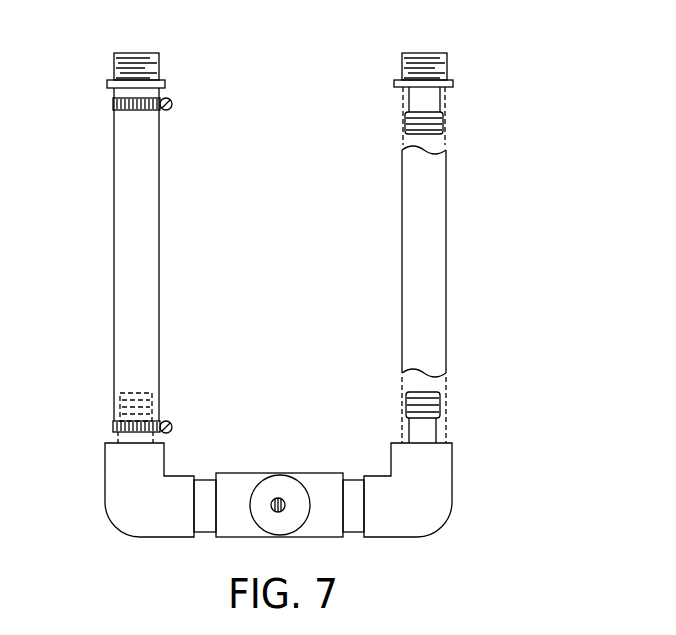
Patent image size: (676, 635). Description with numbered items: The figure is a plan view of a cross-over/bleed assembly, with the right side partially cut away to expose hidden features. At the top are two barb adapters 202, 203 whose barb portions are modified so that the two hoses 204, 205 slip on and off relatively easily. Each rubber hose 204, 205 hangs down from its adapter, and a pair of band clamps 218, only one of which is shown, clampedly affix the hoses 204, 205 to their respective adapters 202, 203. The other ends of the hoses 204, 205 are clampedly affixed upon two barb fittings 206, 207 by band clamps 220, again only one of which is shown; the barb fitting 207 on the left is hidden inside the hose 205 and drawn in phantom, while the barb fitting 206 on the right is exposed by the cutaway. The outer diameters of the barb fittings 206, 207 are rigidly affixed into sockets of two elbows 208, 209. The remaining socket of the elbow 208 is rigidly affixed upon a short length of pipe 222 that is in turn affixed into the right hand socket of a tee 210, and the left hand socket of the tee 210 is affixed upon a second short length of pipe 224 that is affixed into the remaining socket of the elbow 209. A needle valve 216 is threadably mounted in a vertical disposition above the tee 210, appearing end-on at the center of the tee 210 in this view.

The barb adapter 202 is at (420, 52).
The barb adapter 203 is at (131, 52).
The hose 204 is at (447, 257).
The hose 205 is at (238, 258).
The barb fitting 206 is at (436, 428).
The barb fitting 207 is at (121, 393).
The elbow 208 is at (447, 500).
The elbow 209 is at (112, 497).
The tee 210 is at (240, 537).
The needle valve 216 is at (282, 500).
The band clamp 218 is at (250, 115).
The band clamp 220 is at (170, 421).
The short length of pipe 222 is at (352, 525).
The short length of pipe 224 is at (206, 525).